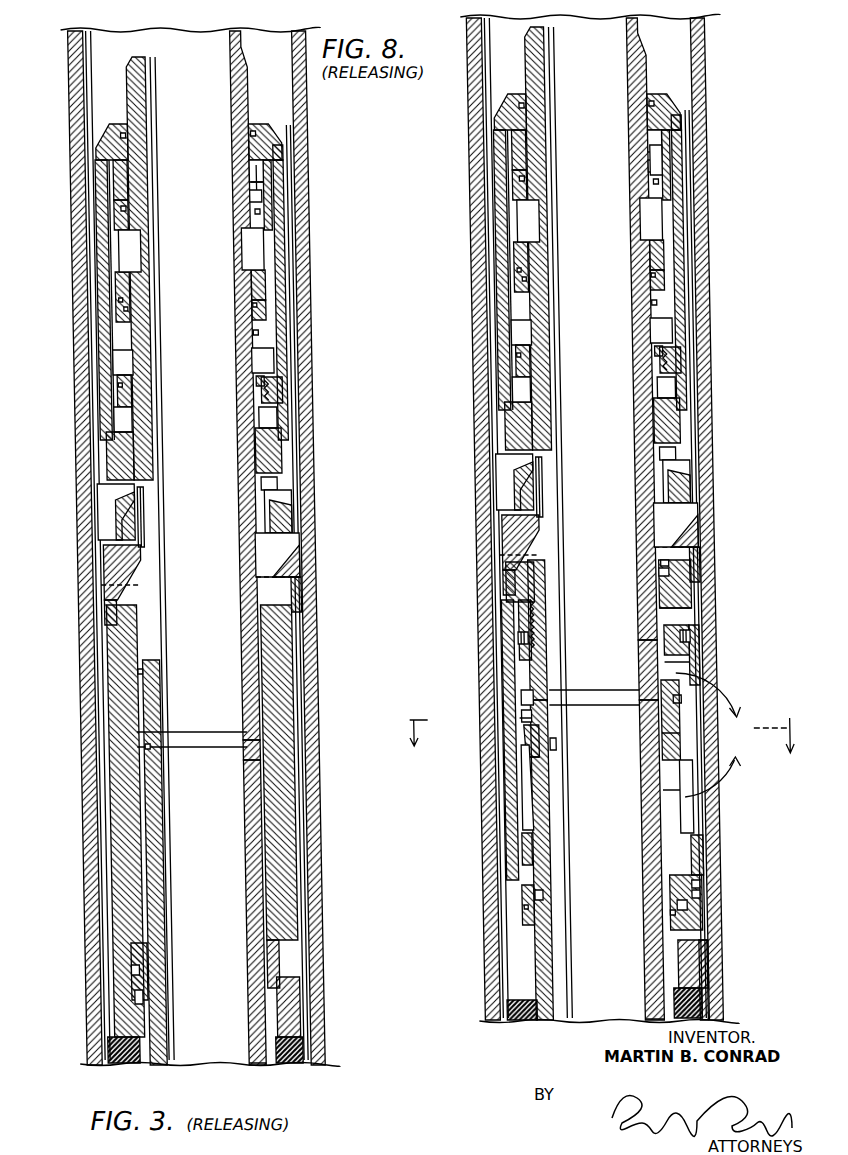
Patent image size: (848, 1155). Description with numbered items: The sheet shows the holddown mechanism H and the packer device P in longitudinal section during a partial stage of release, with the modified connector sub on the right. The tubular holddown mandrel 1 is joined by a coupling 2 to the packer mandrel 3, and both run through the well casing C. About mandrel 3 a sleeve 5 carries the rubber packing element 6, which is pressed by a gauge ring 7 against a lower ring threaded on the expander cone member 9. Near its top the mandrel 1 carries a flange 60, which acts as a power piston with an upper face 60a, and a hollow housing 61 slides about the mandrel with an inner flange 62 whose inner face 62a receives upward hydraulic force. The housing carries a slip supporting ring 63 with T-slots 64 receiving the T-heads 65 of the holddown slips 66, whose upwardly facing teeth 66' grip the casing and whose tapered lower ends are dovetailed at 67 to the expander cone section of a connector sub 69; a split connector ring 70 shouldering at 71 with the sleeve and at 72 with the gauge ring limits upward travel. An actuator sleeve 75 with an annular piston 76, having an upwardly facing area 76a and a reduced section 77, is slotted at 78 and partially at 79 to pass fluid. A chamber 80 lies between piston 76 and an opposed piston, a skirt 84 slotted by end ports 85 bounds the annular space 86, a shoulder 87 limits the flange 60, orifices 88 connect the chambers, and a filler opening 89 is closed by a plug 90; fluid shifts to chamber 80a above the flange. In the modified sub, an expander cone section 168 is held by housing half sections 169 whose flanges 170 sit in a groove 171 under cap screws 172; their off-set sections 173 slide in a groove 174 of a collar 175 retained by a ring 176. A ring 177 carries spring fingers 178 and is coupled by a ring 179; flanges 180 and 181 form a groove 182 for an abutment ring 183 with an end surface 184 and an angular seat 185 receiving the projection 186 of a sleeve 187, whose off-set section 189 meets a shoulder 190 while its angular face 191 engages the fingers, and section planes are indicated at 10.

In FIG. 3, the holddown mandrel 1 is at (227, 96).
In FIG. 8, the holddown mandrel 1 is at (626, 50).
In FIG. 3, the coupling 2 is at (243, 722).
In FIG. 8, the coupling 2 is at (528, 652).
In FIG. 3, the packer mandrel 3 is at (236, 865).
In FIG. 8, the packer mandrel 3 is at (524, 860).
In FIG. 3, the sleeve 5 is at (248, 1063).
In FIG. 8, the sleeve 5 is at (521, 1022).
In FIG. 3, the packing element 6 is at (285, 1048).
In FIG. 8, the packing element 6 is at (481, 1008).
In FIG. 3, the gauge ring 7 is at (276, 1015).
In FIG. 8, the gauge ring 7 is at (682, 955).
In FIG. 8, the expander cone member 9 is at (600, 720).
In FIG. 8, the section line 10- 10 is at (710, 735).
In FIG. 3, the mandrel flange 60 is at (118, 208).
In FIG. 3, the upper face of mandrel flange 60a is at (245, 199).
In FIG. 3, the housing 61 is at (270, 227).
In FIG. 3, the housing flange 62 is at (98, 132).
In FIG. 8, the housing flange 62 is at (549, 112).
In FIG. 3, the inner face of housing flange 62a is at (245, 158).
In FIG. 8, the inner face of housing flange 62a is at (617, 140).
In FIG. 3, the slip supporting ring 63 is at (97, 438).
In FIG. 3, the T-slots 64 is at (103, 486).
In FIG. 8, the T-slots 64 is at (591, 475).
In FIG. 3, the T-heads 65 is at (113, 511).
In FIG. 8, the T-heads 65 is at (592, 484).
In FIG. 3, the holddown slips 66 is at (197, 566).
In FIG. 8, the holddown slips 66 is at (590, 536).
In FIG. 3, the wickers or teeth 66' is at (199, 579).
In FIG. 3, the dove-tailed fit 67 is at (95, 609).
In FIG. 3, the connector sub 69 is at (267, 663).
In FIG. 3, the connector ring 70 is at (111, 976).
In FIG. 8, the connector ring 70 is at (671, 893).
In FIG. 3, the shoulder 71 is at (112, 948).
In FIG. 8, the shoulder 71 is at (638, 880).
In FIG. 3, the shoulder 72 is at (115, 1001).
In FIG. 8, the shoulder 72 is at (638, 913).
In FIG. 3, the actuator sleeve 75 is at (128, 422).
In FIG. 8, the actuator sleeve 75 is at (553, 400).
In FIG. 3, the annular piston 76 is at (104, 394).
In FIG. 8, the annular piston 76 is at (556, 360).
In FIG. 3, the upwardly facing area of piston 76a is at (118, 365).
In FIG. 3, the reduced section 77 is at (135, 510).
In FIG. 8, the reduced section 77 is at (591, 487).
In FIG. 3, the radial slot 78 is at (241, 453).
In FIG. 3, the partial radial slot 79 is at (244, 333).
In FIG. 3, the annular chamber 80 is at (258, 358).
In FIG. 8, the annular chamber 80 is at (703, 330).
In FIG. 8, the chamber 80a is at (706, 157).
In FIG. 3, the upper skirt 84 is at (254, 183).
In FIG. 3, the end ports 85 is at (107, 163).
In FIG. 8, the end ports 85 is at (587, 249).
In FIG. 3, the annular clearance space 86 is at (266, 212).
In FIG. 8, the annular clearance space 86 is at (704, 205).
In FIG. 3, the shoulder 87 is at (252, 268).
In FIG. 3, the orifices 88 is at (116, 314).
In FIG. 8, the orifices 88 is at (587, 279).
In FIG. 3, the filler opening 89 is at (248, 383).
In FIG. 8, the filler opening 89 is at (626, 337).
In FIG. 3, the closure plug 90 is at (270, 395).
In FIG. 8, the closure plug 90 is at (638, 363).
In FIG. 8, the expander cone section 168 is at (661, 578).
In FIG. 8, the housing half sections 169 is at (493, 660).
In FIG. 8, the inwardly extended flange 170 is at (505, 633).
In FIG. 8, the groove 171 is at (670, 662).
In FIG. 8, the cap screws 172 is at (495, 637).
In FIG. 8, the off-set section 173 is at (498, 893).
In FIG. 8, the radial groove 174 is at (673, 885).
In FIG. 8, the collar 175 is at (523, 895).
In FIG. 8, the ring 176 is at (495, 913).
In FIG. 8, the ring 177 is at (499, 845).
In FIG. 8, the spring fingers 178 is at (507, 808).
In FIG. 8, the coupling ring 179 is at (672, 842).
In FIG. 8, the flange 180 is at (507, 690).
In FIG. 8, the flange 181 is at (504, 725).
In FIG. 8, the groove 182 is at (502, 700).
In FIG. 8, the abutment ring 183 is at (502, 718).
In FIG. 8, the end surface 184 is at (511, 740).
In FIG. 8, the angular seat 185 is at (656, 733).
In FIG. 8, the annular projection 186 is at (546, 745).
In FIG. 8, the sleeve 187 is at (643, 607).
In FIG. 8, the off-set section 189 is at (637, 573).
In FIG. 8, the shoulder 190 is at (641, 563).
In FIG. 8, the angular face 191 is at (640, 790).
In FIG. 3, the well casing C is at (299, 320).
In FIG. 8, the well casing C is at (697, 198).
In FIG. 3, the holddown mechanism H is at (290, 193).
In FIG. 8, the holddown mechanism H is at (690, 188).
In FIG. 3, the packer device P is at (289, 980).
In FIG. 8, the packer device P is at (681, 985).